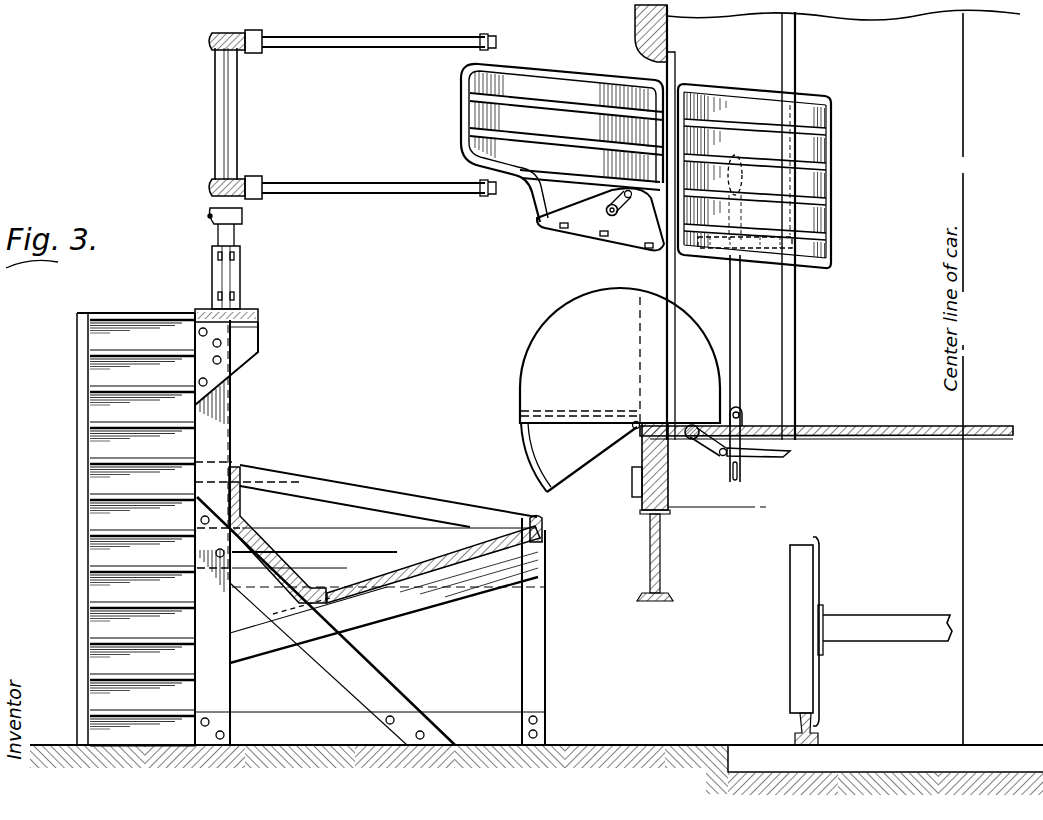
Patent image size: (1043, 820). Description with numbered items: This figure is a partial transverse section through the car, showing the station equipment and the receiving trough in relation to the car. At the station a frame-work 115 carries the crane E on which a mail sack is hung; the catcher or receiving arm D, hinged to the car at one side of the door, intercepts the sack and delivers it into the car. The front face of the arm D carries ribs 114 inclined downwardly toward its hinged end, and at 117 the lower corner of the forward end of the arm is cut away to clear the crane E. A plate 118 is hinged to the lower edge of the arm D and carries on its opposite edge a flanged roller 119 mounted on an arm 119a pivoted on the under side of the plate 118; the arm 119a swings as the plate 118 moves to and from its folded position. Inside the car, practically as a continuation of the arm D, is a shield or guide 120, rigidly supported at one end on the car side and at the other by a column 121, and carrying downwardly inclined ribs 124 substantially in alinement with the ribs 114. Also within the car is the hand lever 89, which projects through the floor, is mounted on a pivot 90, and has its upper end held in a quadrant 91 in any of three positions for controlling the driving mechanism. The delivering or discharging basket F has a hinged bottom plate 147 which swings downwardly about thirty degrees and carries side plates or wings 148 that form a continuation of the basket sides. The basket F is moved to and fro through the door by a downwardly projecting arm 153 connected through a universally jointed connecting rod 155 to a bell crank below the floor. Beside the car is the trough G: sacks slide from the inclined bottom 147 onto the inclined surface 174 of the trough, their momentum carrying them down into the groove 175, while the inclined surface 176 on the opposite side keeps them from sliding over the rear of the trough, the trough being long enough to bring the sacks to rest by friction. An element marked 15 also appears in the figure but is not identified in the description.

The station crane E is at (213, 113).
The catcher or receiving arm D is at (470, 92).
The frame-work 115 is at (256, 318).
The ribs 114 is at (536, 124).
The cut-away lower corner 117 is at (492, 178).
The plate 118 is at (592, 212).
The flanged roller 119 is at (630, 190).
The arm 119a is at (616, 214).
The shield or guide 120 is at (731, 100).
The column 121 is at (796, 48).
The ribs 124 is at (742, 128).
The quadrant 91 is at (757, 262).
The hand lever 89 is at (742, 294).
The pivot 90 is at (742, 410).
The rod 15 is at (686, 424).
The delivering or discharging basket F is at (620, 355).
The side plates or wings 148 is at (556, 457).
The hinged bottom plate 147 is at (574, 476).
The downwardly projecting arm 153 is at (715, 458).
The universally jointed connecting rod 155 is at (762, 452).
The trough G is at (383, 590).
The inclined surface 174 is at (438, 562).
The inclined surface 176 is at (268, 560).
The groove 175 is at (315, 590).